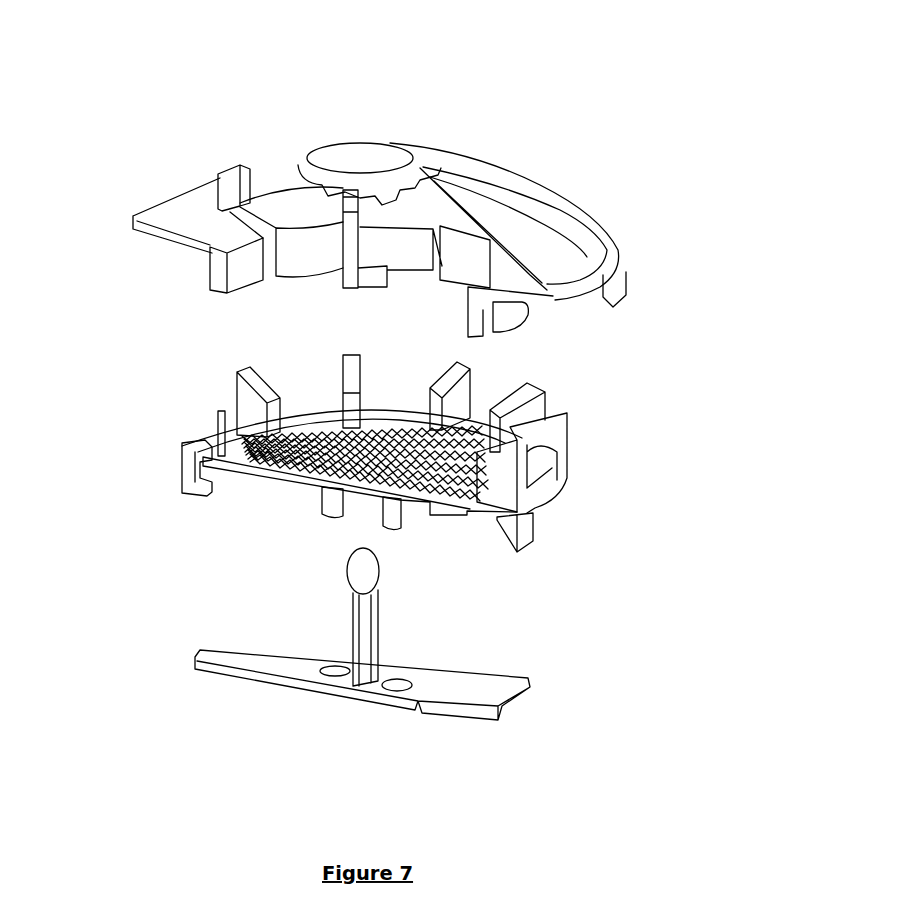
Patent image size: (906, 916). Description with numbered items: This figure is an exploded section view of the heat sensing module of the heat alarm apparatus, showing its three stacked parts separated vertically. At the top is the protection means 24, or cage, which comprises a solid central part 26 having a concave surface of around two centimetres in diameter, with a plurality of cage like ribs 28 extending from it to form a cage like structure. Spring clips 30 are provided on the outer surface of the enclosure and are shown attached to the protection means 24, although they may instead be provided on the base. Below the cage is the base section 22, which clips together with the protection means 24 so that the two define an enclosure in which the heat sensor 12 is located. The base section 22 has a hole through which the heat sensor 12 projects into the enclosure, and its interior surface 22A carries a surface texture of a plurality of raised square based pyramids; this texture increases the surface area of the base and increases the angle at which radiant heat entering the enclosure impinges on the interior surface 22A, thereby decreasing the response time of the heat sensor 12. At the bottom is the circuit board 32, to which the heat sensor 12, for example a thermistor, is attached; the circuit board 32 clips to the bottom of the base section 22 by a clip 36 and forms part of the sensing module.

The heat sensor 12 is at (373, 568).
The base section 22 is at (387, 442).
The interior surface 22A is at (307, 433).
The protection means 24 is at (441, 168).
The solid central part 26 is at (349, 150).
The cage like ribs 28 is at (483, 185).
The spring clips 30 is at (622, 278).
The circuit board 32 is at (451, 670).
The clip 36 is at (546, 535).